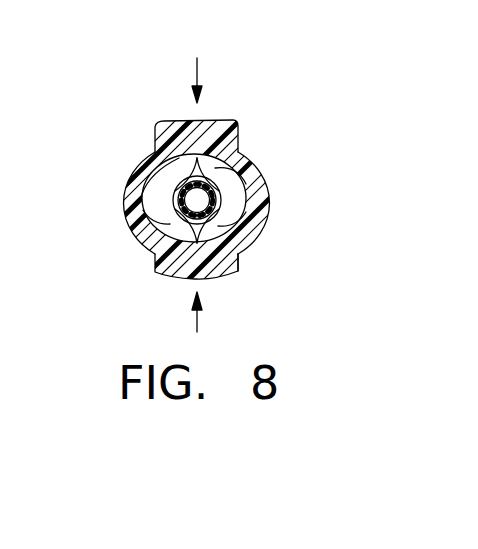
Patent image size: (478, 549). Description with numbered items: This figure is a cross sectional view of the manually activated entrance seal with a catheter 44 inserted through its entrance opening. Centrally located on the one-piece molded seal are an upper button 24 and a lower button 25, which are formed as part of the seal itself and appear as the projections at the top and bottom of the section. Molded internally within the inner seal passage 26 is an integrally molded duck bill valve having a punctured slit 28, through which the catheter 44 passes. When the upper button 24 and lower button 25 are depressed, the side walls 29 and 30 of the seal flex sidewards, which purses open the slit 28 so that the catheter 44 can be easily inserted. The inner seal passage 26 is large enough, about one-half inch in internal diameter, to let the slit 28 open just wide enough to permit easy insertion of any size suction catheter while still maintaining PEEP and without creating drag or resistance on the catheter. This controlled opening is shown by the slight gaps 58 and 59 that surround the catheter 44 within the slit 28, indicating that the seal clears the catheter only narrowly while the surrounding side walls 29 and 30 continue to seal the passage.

The upper button 24 is at (218, 125).
The lower button 25 is at (168, 270).
The inner seal passage 26 is at (252, 192).
The punctured slit 28 is at (252, 155).
The side wall 29 is at (268, 222).
The side wall 30 is at (153, 155).
The catheter 44 is at (145, 237).
The slight gap 58 is at (242, 258).
The slight gap 59 is at (132, 177).